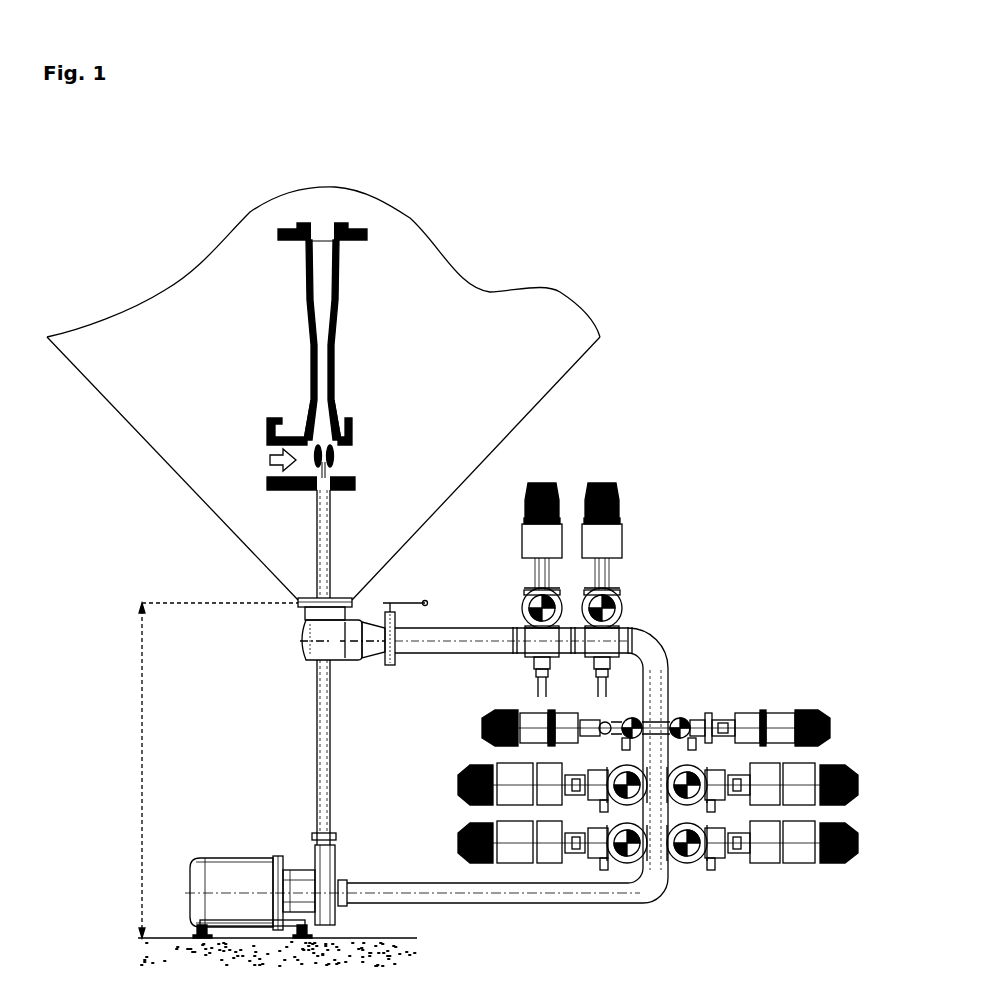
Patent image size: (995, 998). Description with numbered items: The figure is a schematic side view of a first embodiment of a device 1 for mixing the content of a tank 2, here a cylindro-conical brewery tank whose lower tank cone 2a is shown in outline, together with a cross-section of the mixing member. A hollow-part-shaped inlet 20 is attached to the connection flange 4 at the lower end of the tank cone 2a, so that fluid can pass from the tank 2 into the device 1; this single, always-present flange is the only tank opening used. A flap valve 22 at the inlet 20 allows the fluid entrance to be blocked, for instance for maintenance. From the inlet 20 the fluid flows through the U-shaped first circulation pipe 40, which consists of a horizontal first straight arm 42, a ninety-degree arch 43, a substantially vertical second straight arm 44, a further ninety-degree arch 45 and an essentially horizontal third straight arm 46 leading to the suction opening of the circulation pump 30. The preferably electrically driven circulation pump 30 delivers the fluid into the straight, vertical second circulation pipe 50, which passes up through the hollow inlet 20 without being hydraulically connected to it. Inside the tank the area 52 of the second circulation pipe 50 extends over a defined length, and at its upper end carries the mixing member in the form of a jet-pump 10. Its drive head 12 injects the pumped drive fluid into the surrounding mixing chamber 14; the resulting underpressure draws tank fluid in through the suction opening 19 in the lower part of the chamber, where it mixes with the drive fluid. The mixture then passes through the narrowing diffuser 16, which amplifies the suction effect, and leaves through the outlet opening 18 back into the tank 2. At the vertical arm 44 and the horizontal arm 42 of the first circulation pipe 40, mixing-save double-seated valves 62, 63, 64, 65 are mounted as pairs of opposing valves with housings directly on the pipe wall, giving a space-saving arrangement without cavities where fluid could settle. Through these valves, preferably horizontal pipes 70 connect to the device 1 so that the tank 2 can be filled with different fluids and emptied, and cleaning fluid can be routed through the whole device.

The device 1 is at (100, 201).
The tank 2 is at (572, 258).
The tank cone 2a is at (513, 428).
The connection flange 4 is at (333, 600).
The jet-pump 10 is at (339, 293).
The drive head 12 is at (332, 454).
The mixing chamber 14 is at (322, 417).
The diffuser 16 is at (330, 280).
The outlet opening 18 is at (328, 224).
The suction opening 19 is at (267, 445).
The inlet 20 is at (314, 650).
The flap valve 22 is at (397, 604).
The circulation pump 30 is at (305, 885).
The first circulation pipe 40 is at (455, 648).
The first straight arm 42 is at (455, 648).
The 90°-arch 43 is at (655, 640).
The second straight arm 44 is at (668, 685).
The 90°-arch 45 is at (645, 887).
The third straight arm 46 is at (437, 900).
The second circulation pipe 50 is at (320, 773).
The area of the second circulation pipe 52 is at (327, 535).
The double-seated valve 62 is at (687, 735).
The double-seated valve 63 is at (630, 850).
The double-seated valve 64 is at (613, 600).
The double-seated valve 65 is at (678, 793).
The pipes 70 is at (603, 606).